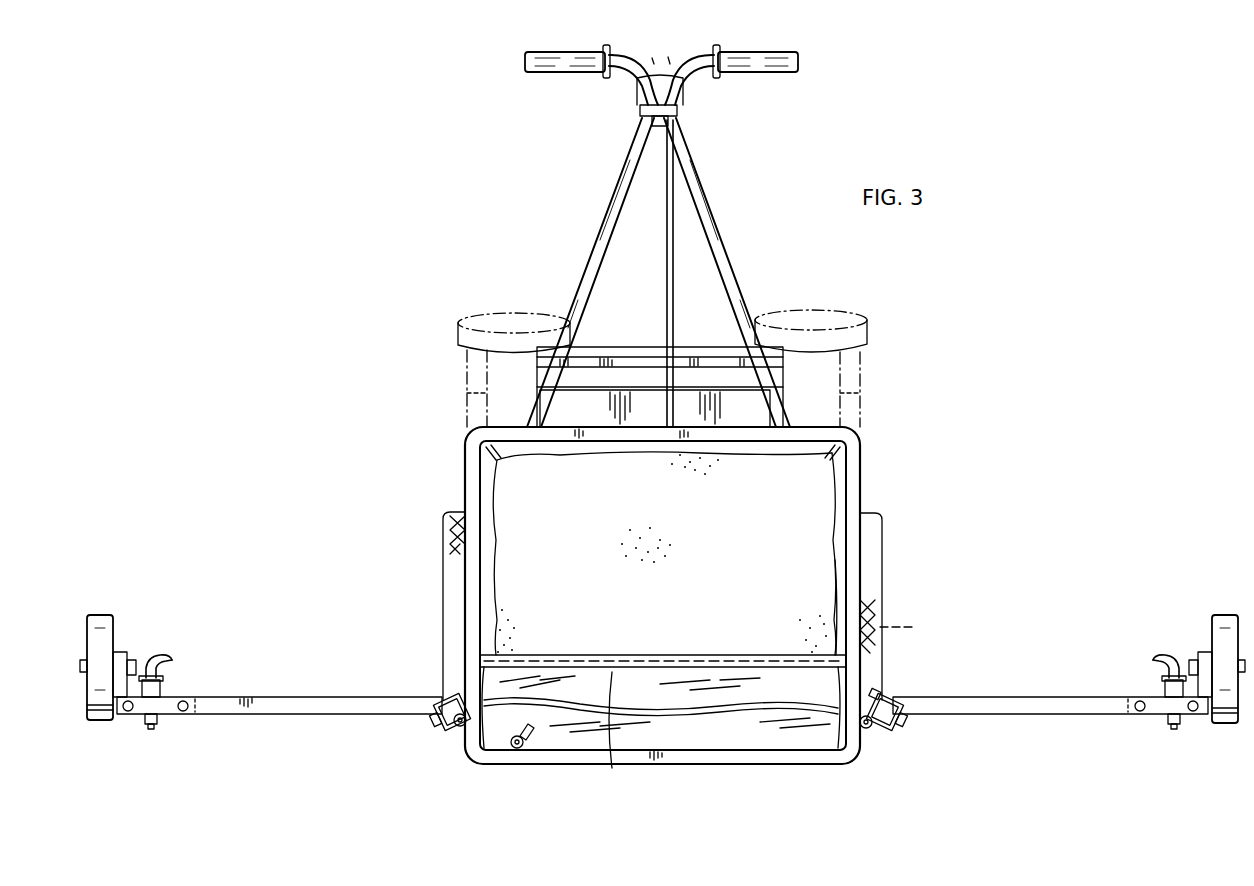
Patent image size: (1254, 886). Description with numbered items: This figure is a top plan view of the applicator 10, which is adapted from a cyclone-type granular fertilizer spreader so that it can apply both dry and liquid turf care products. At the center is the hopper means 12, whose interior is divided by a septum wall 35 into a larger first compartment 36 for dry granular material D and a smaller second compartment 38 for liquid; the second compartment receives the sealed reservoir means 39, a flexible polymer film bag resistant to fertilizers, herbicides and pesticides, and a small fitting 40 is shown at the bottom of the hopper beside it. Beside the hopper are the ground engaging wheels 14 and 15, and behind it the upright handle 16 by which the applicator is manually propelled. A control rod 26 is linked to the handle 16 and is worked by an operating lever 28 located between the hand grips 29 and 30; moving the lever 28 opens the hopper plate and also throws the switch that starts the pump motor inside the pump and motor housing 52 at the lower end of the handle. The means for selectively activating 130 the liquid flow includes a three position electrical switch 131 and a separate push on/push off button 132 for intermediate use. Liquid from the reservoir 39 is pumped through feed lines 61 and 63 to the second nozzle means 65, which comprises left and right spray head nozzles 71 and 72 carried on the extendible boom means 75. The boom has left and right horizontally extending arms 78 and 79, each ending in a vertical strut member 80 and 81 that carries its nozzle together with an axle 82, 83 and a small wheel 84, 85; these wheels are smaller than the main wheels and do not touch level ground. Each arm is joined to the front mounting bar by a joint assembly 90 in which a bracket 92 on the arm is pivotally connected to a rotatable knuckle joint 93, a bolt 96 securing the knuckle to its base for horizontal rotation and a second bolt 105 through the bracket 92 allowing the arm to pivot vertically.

The applicator 10 is at (366, 404).
The hopper means 12 is at (462, 490).
The ground engaging wheel 14 is at (455, 567).
The ground engaging wheel 15 is at (876, 553).
The upright handle 16 is at (722, 218).
The control rod 26 is at (667, 278).
The operating lever 28 is at (683, 110).
The hand grip 29 is at (545, 71).
The hand grip 30 is at (780, 70).
The septum wall 35 is at (613, 733).
The first compartment 36 is at (842, 596).
The second compartment 38 is at (480, 672).
The sealed reservoir means 39 is at (738, 734).
The drain fitting 40 is at (520, 750).
The pump and motor housing 52 is at (614, 384).
The feed line 61 is at (162, 660).
The feed line 63 is at (1160, 662).
The second nozzle means 65 is at (156, 728).
The left spray head nozzle 71 is at (150, 726).
The right spray head nozzle 72 is at (1180, 728).
The extendible boom means 75 is at (320, 694).
The left arm 78 is at (475, 418).
The right arm 79 is at (866, 411).
The vertical strut member 80 is at (470, 368).
The vertical strut member 81 is at (868, 372).
The axle 82 is at (122, 654).
The axle 83 is at (1204, 660).
The wheel 84 is at (464, 330).
The wheel 85 is at (864, 332).
The joint assembly 90 is at (441, 749).
The bracket 92 is at (434, 722).
The knuckle joint 93 is at (895, 726).
The bolt 96 is at (462, 728).
The second bolt 105 is at (879, 694).
The means for selectively activating 130 is at (632, 95).
The three position electrical switch 131 is at (684, 66).
The push on/push off button 132 is at (636, 63).
The dry granular material D is at (815, 515).